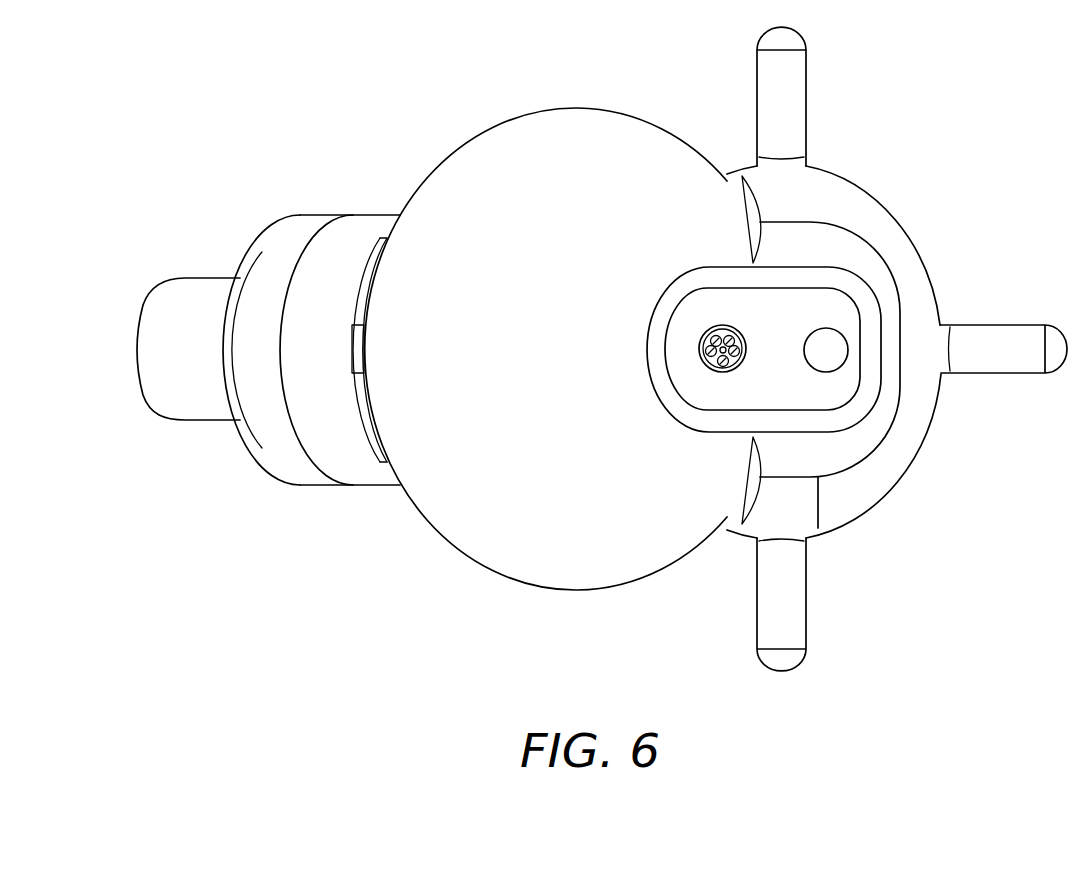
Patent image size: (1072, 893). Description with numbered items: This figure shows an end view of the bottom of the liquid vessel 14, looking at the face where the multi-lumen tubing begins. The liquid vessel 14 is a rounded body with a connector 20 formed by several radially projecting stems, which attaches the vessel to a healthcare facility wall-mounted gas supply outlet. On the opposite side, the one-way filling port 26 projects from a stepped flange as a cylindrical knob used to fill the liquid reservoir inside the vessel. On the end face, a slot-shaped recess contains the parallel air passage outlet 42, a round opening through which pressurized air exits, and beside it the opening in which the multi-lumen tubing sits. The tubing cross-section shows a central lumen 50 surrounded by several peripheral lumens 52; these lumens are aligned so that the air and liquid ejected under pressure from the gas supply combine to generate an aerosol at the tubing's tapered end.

The liquid vessel 14 is at (488, 96).
The connector 20 is at (767, 72).
The one-way filling port 26 is at (200, 288).
The parallel air passage outlet 42 is at (822, 347).
The central lumen 50 is at (721, 353).
The peripheral lumens 52 is at (718, 343).